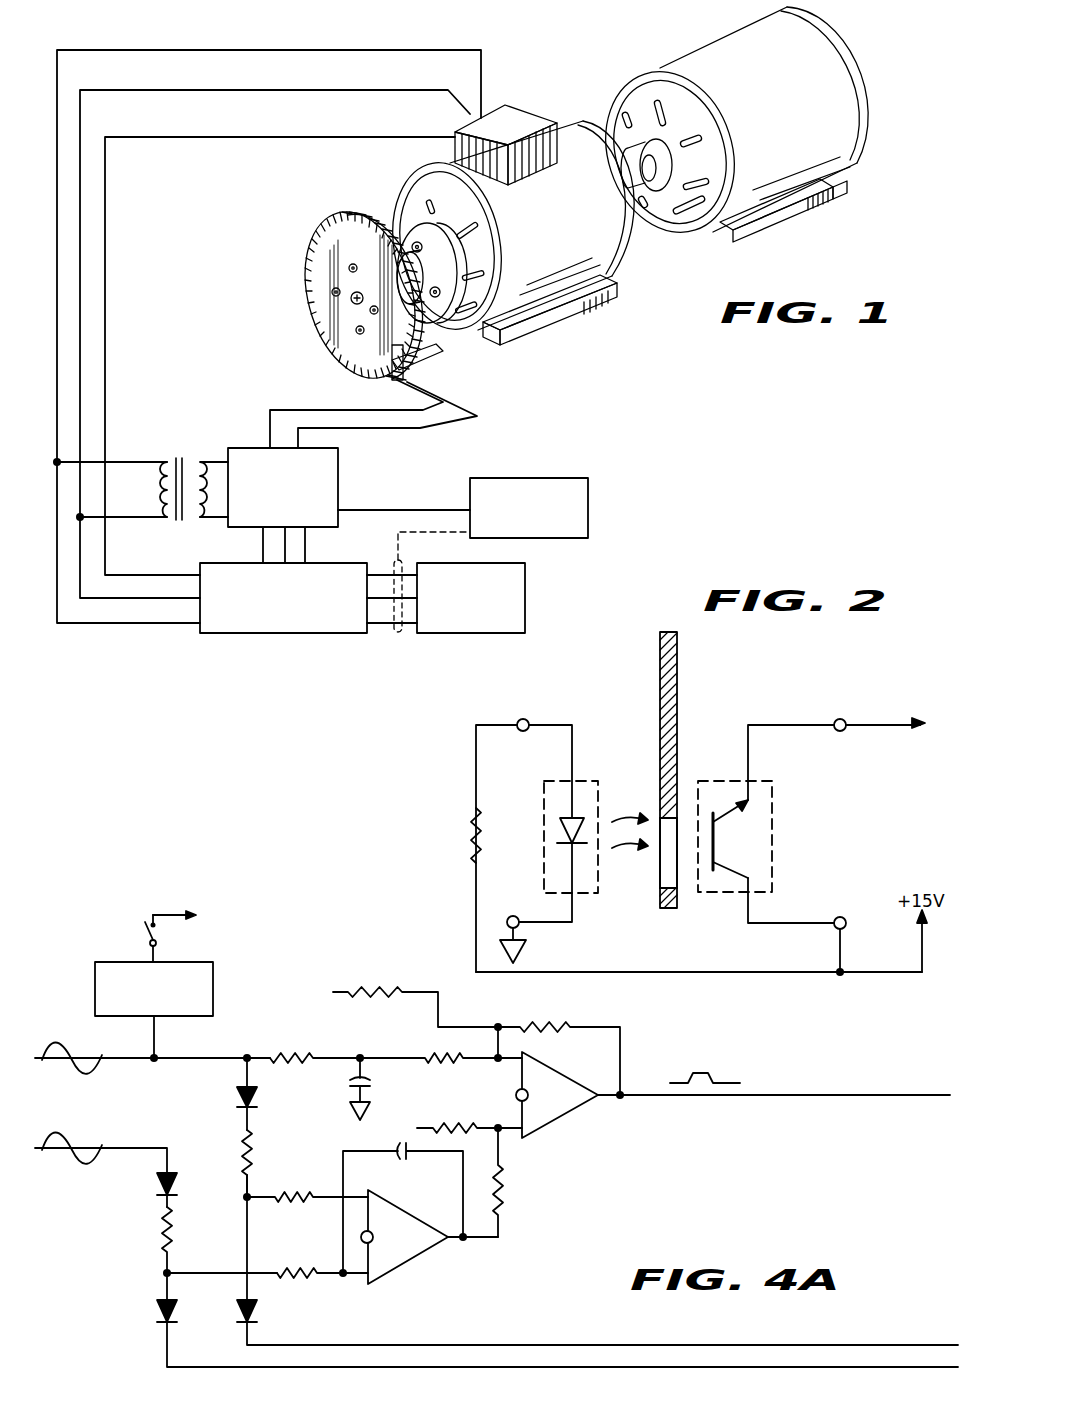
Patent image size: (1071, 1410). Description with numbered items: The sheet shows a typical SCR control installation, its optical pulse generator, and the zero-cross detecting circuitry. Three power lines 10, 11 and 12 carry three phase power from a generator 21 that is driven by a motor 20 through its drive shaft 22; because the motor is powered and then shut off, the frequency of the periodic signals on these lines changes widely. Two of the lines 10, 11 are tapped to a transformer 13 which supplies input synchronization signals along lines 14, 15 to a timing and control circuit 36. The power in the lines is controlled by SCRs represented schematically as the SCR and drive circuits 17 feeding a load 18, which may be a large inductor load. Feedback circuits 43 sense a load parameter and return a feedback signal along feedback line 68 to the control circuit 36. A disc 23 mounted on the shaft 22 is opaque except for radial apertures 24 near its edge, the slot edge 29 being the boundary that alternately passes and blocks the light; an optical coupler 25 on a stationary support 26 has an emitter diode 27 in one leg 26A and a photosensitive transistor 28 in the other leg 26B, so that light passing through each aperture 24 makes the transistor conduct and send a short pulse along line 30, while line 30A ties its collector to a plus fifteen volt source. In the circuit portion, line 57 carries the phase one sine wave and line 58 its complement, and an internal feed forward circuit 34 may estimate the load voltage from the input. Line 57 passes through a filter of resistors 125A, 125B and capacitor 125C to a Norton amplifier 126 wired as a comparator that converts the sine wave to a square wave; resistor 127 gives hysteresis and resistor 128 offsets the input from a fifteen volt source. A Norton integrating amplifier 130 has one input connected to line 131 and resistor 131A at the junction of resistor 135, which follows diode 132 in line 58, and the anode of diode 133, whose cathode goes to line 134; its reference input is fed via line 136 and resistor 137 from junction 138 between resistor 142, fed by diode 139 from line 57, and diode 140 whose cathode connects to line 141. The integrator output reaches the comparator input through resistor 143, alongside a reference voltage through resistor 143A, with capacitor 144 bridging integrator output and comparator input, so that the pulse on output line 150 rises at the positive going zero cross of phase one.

In FIG. 1, the power line 10 is at (362, 48).
In FIG. 1, the power line 11 is at (332, 88).
In FIG. 1, the power line 12 is at (317, 133).
In FIG. 1, the transformer 13 is at (169, 459).
In FIG. 1, the synchronization signal line 14 is at (208, 456).
In FIG. 1, the synchronization signal line 15 is at (206, 522).
In FIG. 1, the SCR and drive circuits 17 is at (278, 637).
In FIG. 1, the load 18 is at (487, 637).
In FIG. 1, the motor 20 is at (720, 55).
In FIG. 1, the generator 21 is at (600, 264).
In FIG. 1, the drive shaft 22 is at (350, 299).
In FIG. 1, the disc 23 is at (340, 294).
In FIG. 2, the disc 23 is at (680, 662).
In FIG. 1, the apertures 24 is at (308, 262).
In FIG. 2, the apertures 24 is at (657, 878).
In FIG. 1, the optical coupler 25 is at (453, 373).
In FIG. 2, the optical coupler 25 is at (698, 825).
In FIG. 1, the support 26 is at (390, 233).
In FIG. 1, the support leg 26A is at (396, 382).
In FIG. 1, the support leg 26B is at (430, 344).
In FIG. 2, the emitter diode 27 is at (565, 842).
In FIG. 2, the photosensitive transistor 28 is at (715, 815).
In FIG. 2, the slot edge 29 is at (668, 853).
In FIG. 1, the output line 30 is at (447, 411).
In FIG. 2, the output line 30 is at (810, 723).
In FIG. 1, the supply line 30A is at (327, 410).
In FIG. 2, the supply line 30A is at (842, 977).
In FIG. 4A, the feed forward signal source circuit 34 is at (214, 1000).
In FIG. 1, the timing and control circuit 36 is at (338, 472).
In FIG. 1, the feedback circuits 43 is at (591, 528).
In FIG. 4A, the phase one line 57 is at (114, 1062).
In FIG. 4A, the complement phase one line 58 is at (118, 1150).
In FIG. 1, the feedback line 68 is at (410, 510).
In FIG. 4A, the feedback line 68 is at (229, 916).
In FIG. 4A, the resistor 125A is at (323, 1034).
In FIG. 4A, the resistor 125B is at (440, 1037).
In FIG. 4A, the capacitor 125C is at (380, 1088).
In FIG. 4A, the Norton amplifier 126 is at (553, 1102).
In FIG. 4A, the resistor 127 is at (565, 1026).
In FIG. 4A, the resistor 128 is at (412, 960).
In FIG. 4A, the Norton integrating amplifier 130 is at (390, 1262).
In FIG. 4A, the line 131 is at (231, 1271).
In FIG. 4A, the resistor 131A is at (326, 1270).
In FIG. 4A, the diode 132 is at (157, 1184).
In FIG. 4A, the diode 133 is at (155, 1310).
In FIG. 4A, the line 134 is at (770, 1368).
In FIG. 4A, the resistor 135 is at (162, 1246).
In FIG. 4A, the line 136 is at (427, 1228).
In FIG. 4A, the resistor 137 is at (323, 1195).
In FIG. 4A, the junction 138 is at (243, 1200).
In FIG. 4A, the diode 139 is at (236, 1093).
In FIG. 4A, the diode 140 is at (260, 1311).
In FIG. 4A, the line 141 is at (734, 1343).
In FIG. 4A, the resistor 142 is at (240, 1150).
In FIG. 4A, the resistor 143 is at (503, 1185).
In FIG. 4A, the resistor 143A is at (454, 1124).
In FIG. 4A, the capacitor 144 is at (394, 1148).
In FIG. 4A, the output line 150 is at (782, 1098).